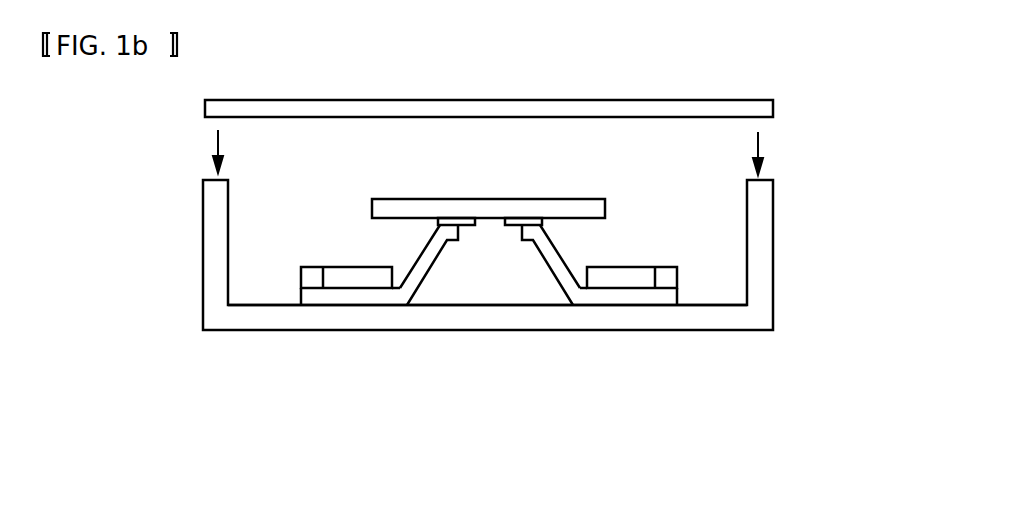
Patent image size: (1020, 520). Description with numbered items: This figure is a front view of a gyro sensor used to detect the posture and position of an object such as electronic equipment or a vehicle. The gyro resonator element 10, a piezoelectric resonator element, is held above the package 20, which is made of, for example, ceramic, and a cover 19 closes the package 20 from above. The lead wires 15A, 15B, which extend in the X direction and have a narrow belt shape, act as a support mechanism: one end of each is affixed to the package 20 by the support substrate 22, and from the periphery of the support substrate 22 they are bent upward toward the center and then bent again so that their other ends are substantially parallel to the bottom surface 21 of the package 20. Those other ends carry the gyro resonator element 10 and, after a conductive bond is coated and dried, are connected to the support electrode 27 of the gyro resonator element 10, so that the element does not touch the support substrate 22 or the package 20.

The cover 19 is at (752, 113).
The package 20 is at (752, 318).
The bottom surface 21 is at (710, 303).
The support substrate 22 is at (637, 277).
The gyro resonator element 10 is at (563, 208).
The support electrode 27 is at (457, 218).
The lead wire 15A is at (423, 267).
The lead wire 15B is at (557, 267).